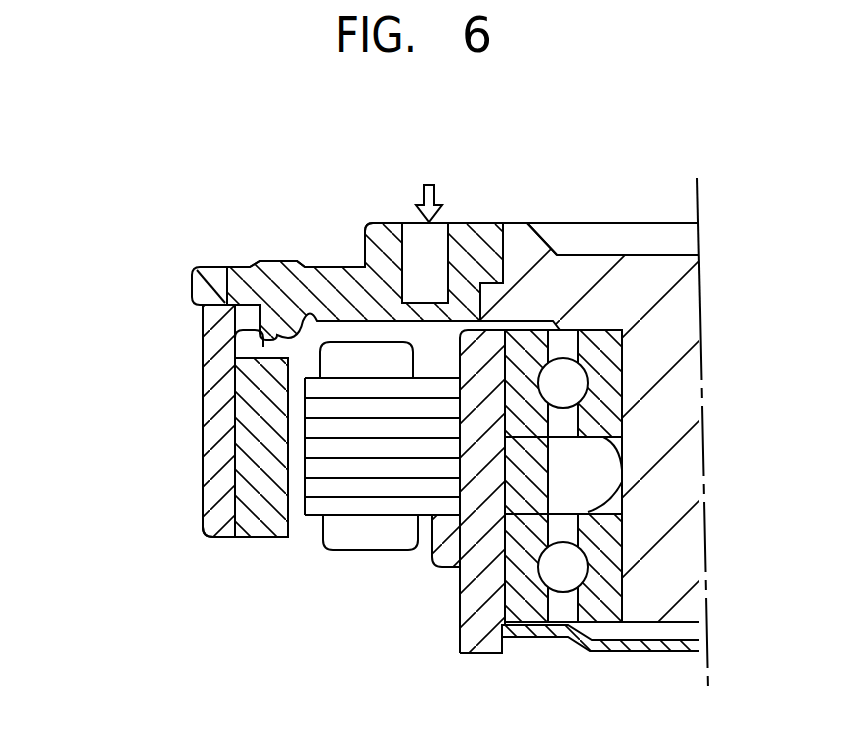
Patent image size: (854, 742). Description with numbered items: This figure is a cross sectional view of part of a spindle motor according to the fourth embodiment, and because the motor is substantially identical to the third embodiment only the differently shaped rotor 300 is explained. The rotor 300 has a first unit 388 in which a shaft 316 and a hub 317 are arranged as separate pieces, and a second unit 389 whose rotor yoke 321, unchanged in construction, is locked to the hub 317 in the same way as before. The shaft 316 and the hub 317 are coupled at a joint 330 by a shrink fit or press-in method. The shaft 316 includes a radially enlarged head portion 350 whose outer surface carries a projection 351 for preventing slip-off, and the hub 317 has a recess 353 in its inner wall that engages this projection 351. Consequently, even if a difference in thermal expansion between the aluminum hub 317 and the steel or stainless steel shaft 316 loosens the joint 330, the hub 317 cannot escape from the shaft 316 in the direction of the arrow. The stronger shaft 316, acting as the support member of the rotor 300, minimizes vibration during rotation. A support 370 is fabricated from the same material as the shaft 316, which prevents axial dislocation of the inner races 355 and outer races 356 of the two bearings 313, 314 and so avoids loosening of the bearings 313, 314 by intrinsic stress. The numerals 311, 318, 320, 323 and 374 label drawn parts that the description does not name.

The rotor 300 is at (355, 215).
The hub flange end 311 is at (221, 272).
The bearing 313 is at (240, 347).
The bearing 314 is at (627, 589).
The shaft 316 is at (683, 613).
The hub 317 is at (451, 220).
The flange portion 318 is at (312, 267).
The rotor hub 320 is at (273, 538).
The rotor yoke 321 is at (207, 461).
The annular projection 323 is at (270, 262).
The joint 330 is at (505, 215).
The head portion 350 is at (657, 252).
The projection 351 is at (488, 305).
The recess 353 is at (497, 307).
The inner races 355 is at (597, 510).
The outer races 356 is at (513, 440).
The support 370 is at (468, 655).
The stator coil 374 is at (352, 553).
The first unit 388 is at (392, 222).
The second unit 389 is at (175, 420).